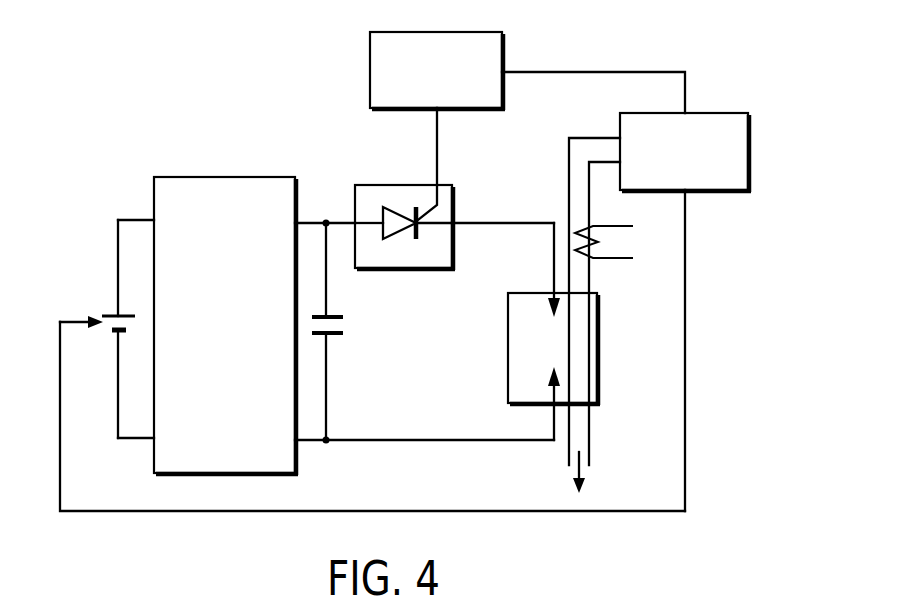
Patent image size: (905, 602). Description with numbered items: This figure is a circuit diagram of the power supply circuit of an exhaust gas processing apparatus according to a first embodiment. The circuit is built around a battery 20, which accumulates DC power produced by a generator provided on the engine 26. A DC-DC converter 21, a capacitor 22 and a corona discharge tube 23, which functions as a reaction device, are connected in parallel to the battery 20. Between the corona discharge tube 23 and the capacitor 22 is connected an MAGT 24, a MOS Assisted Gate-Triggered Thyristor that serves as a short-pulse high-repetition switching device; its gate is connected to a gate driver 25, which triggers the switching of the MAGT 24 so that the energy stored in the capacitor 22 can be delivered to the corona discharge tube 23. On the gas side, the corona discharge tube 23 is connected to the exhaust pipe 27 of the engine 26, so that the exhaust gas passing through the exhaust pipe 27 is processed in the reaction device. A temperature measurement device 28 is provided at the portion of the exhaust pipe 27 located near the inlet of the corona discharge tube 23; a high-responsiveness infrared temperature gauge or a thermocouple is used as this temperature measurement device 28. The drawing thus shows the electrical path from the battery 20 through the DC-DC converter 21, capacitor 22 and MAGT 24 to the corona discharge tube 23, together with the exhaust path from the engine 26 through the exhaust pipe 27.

The battery 20 is at (110, 314).
The DC-DC converter 21 is at (268, 187).
The capacitor 22 is at (343, 330).
The corona discharge tube 23 is at (508, 330).
The MAGT 24 is at (365, 190).
The gate driver 25 is at (483, 40).
The engine 26 is at (724, 122).
The exhaust pipe 27 is at (569, 178).
The temperature measurement device 28 is at (633, 258).